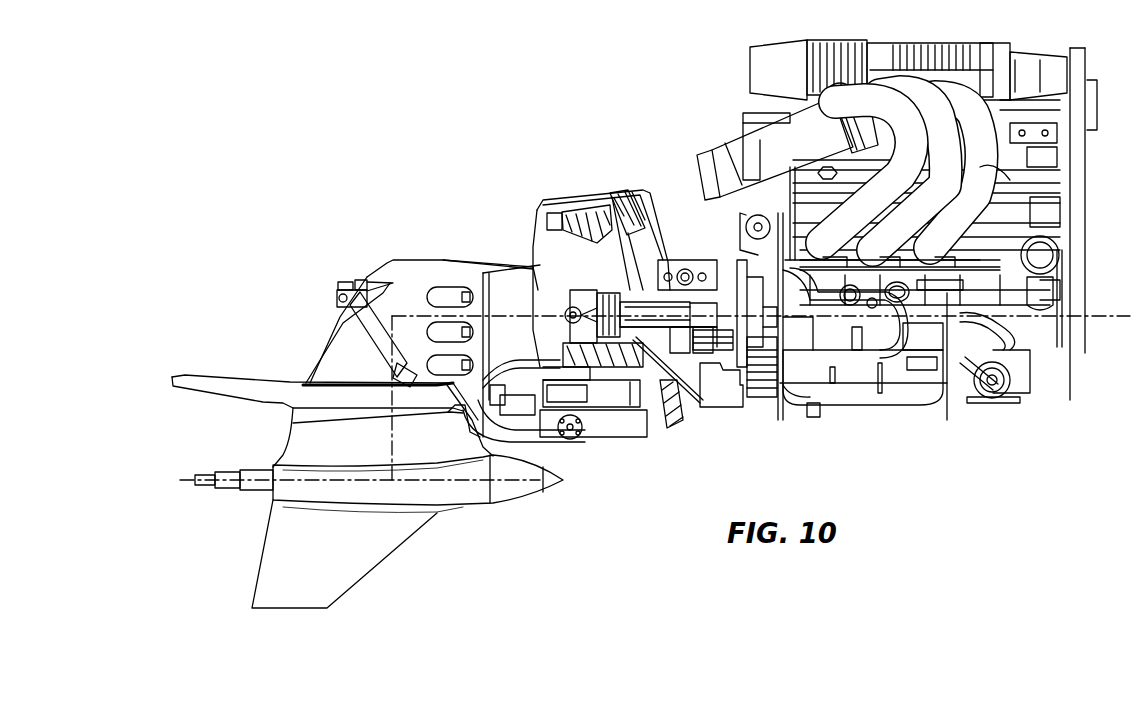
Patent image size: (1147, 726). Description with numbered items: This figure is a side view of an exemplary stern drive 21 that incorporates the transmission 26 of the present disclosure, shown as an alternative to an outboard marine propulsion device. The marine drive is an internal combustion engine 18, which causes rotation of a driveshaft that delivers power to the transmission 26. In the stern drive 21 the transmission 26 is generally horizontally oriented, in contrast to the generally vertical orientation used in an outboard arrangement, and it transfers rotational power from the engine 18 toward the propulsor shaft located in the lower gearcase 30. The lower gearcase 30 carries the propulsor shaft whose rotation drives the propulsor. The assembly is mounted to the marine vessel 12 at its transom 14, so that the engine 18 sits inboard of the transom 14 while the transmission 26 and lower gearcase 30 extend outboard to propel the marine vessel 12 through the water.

The stern drive 21 is at (486, 80).
The marine vessel 12 is at (620, 176).
The transmission 26 is at (692, 245).
The internal combustion engine 18 is at (1042, 230).
The transom 14 is at (677, 430).
The lower gearcase 30 is at (465, 495).